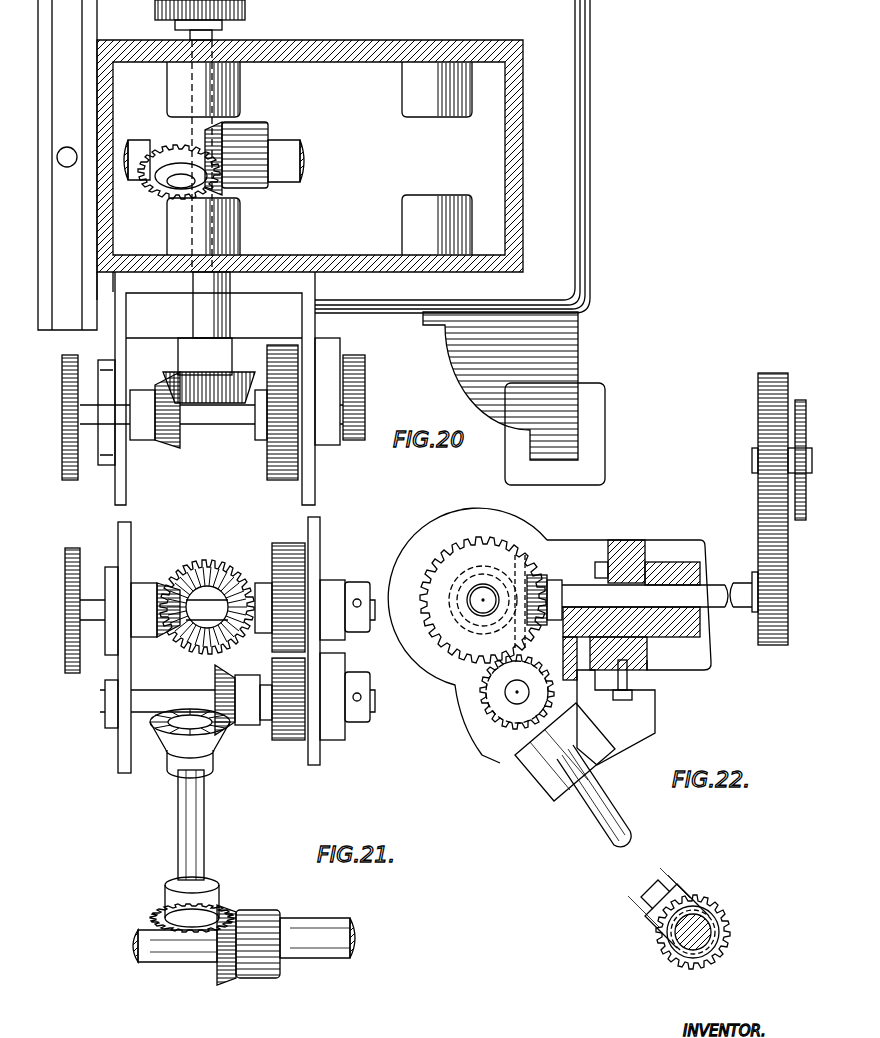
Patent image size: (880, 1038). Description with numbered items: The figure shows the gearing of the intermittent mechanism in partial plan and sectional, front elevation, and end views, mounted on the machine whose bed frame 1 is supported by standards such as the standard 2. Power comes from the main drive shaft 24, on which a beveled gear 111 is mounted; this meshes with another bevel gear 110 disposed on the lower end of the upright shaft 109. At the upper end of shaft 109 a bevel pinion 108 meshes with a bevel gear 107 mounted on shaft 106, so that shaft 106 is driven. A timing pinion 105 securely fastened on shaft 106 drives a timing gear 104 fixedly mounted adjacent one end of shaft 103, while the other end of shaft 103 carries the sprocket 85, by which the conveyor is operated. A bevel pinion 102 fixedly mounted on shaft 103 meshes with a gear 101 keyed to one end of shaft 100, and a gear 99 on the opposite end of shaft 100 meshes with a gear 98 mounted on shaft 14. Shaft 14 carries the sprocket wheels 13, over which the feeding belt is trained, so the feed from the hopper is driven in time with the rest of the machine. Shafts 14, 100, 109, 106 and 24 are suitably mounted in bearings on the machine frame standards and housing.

In FIG. 20, the bed frame 1 is at (565, 245).
In FIG. 20, the standard 2 is at (565, 377).
In FIG. 22, the sprocket wheel 13 is at (798, 400).
In FIG. 22, the shaft 14 is at (758, 448).
In FIG. 20, the main drive shaft 24 is at (141, 141).
In FIG. 21, the main drive shaft 24 is at (356, 937).
In FIG. 22, the main drive shaft 24 is at (677, 938).
In FIG. 20, the sprocket 85 is at (66, 476).
In FIG. 21, the sprocket 85 is at (66, 576).
In FIG. 22, the gear 98 is at (760, 505).
In FIG. 20, the gear 99 is at (247, 10).
In FIG. 22, the gear 99 is at (782, 643).
In FIG. 20, the shaft 100 is at (190, 34).
In FIG. 22, the shaft 100 is at (740, 583).
In FIG. 20, the gear 101 is at (179, 352).
In FIG. 21, the gear 101 is at (208, 600).
In FIG. 22, the gear 101 is at (500, 592).
In FIG. 20, the bevel pinion 102 is at (166, 442).
In FIG. 21, the bevel pinion 102 is at (160, 585).
In FIG. 20, the shaft 103 is at (195, 423).
In FIG. 21, the shaft 103 is at (222, 605).
In FIG. 22, the shaft 103 is at (475, 615).
In FIG. 20, the timing gear 104 is at (268, 475).
In FIG. 21, the timing gear 104 is at (303, 565).
In FIG. 22, the timing gear 104 is at (448, 552).
In FIG. 21, the timing pinion 105 is at (283, 743).
In FIG. 22, the timing pinion 105 is at (505, 712).
In FIG. 21, the shaft 106 is at (170, 697).
In FIG. 22, the shaft 106 is at (508, 702).
In FIG. 21, the bevel gear 107 is at (230, 728).
In FIG. 21, the bevel pinion 108 is at (213, 748).
In FIG. 22, the bevel pinion 108 is at (535, 770).
In FIG. 20, the upright shaft 109 is at (182, 200).
In FIG. 21, the upright shaft 109 is at (206, 848).
In FIG. 22, the upright shaft 109 is at (603, 782).
In FIG. 20, the bevel gear 110 is at (240, 190).
In FIG. 21, the bevel gear 110 is at (223, 908).
In FIG. 22, the bevel gear 110 is at (697, 893).
In FIG. 20, the beveled gear 111 is at (222, 128).
In FIG. 21, the beveled gear 111 is at (220, 977).
In FIG. 22, the beveled gear 111 is at (730, 918).